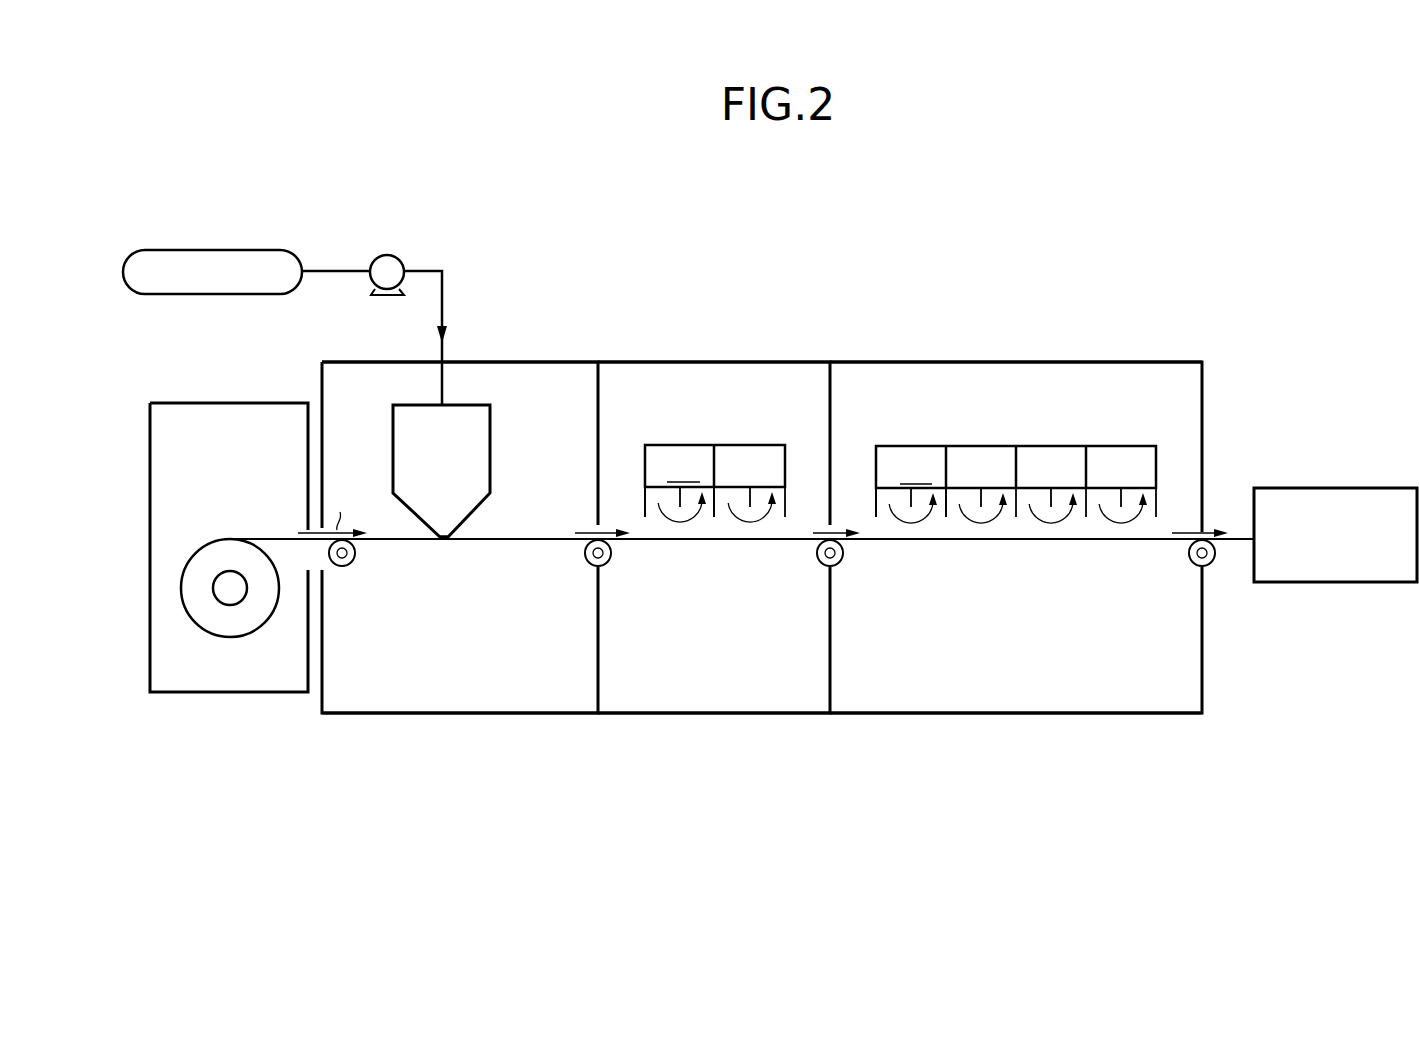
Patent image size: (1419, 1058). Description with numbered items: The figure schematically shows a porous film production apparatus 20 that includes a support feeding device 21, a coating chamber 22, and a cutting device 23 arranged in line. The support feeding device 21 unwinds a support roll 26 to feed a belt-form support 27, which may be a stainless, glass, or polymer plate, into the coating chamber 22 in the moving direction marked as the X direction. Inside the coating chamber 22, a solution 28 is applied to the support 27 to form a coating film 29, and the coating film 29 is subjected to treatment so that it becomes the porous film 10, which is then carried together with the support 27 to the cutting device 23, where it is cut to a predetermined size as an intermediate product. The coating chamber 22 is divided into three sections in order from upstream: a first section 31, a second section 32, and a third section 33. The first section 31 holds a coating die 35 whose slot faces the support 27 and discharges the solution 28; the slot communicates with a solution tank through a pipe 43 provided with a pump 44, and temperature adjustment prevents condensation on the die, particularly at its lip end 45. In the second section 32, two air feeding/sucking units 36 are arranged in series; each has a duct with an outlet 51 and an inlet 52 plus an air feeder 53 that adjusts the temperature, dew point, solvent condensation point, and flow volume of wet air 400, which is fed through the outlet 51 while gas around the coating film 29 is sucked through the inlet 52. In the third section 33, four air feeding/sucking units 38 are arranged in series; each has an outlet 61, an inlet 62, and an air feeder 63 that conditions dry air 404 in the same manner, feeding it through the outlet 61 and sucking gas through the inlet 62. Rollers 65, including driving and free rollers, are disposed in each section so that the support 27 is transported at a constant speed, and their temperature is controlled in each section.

The porous film 10 is at (1236, 530).
The porous film production apparatus 20 is at (1046, 214).
The support feeding device 21 is at (230, 693).
The coating chamber 22 is at (828, 744).
The cutting device 23 is at (1330, 583).
The support roll 26 is at (196, 553).
The support 27 is at (278, 538).
The solution 28 is at (255, 250).
The coating film 29 is at (540, 537).
The first section 31 is at (371, 683).
The second section 32 is at (637, 683).
The third section 33 is at (1030, 683).
The coating die 35 is at (473, 392).
The air feeding/sucking unit 36 is at (712, 462).
The air feeding/sucking unit 38 is at (1014, 448).
The pipe 43 is at (443, 271).
The pump 44 is at (387, 266).
The lip end 45 is at (455, 532).
The outlet 51 is at (650, 490).
The inlet 52 is at (707, 490).
The air feeder 53 is at (683, 469).
The outlet 61 is at (884, 490).
The inlet 62 is at (940, 490).
The air feeder 63 is at (915, 471).
The roller 65 is at (350, 565).
The wet air 400 is at (686, 526).
The dry air 404 is at (1052, 528).